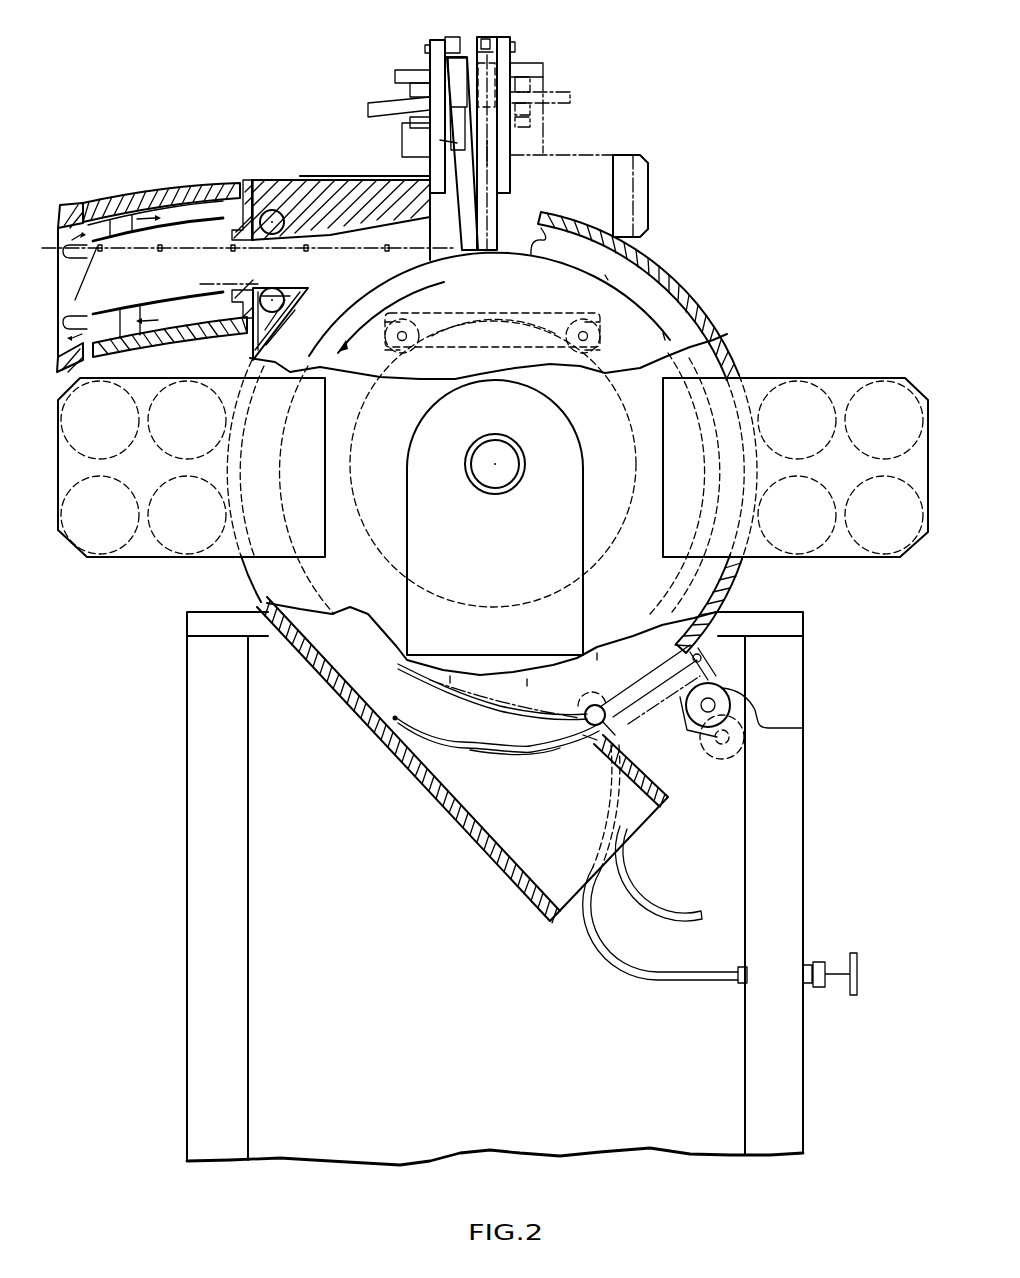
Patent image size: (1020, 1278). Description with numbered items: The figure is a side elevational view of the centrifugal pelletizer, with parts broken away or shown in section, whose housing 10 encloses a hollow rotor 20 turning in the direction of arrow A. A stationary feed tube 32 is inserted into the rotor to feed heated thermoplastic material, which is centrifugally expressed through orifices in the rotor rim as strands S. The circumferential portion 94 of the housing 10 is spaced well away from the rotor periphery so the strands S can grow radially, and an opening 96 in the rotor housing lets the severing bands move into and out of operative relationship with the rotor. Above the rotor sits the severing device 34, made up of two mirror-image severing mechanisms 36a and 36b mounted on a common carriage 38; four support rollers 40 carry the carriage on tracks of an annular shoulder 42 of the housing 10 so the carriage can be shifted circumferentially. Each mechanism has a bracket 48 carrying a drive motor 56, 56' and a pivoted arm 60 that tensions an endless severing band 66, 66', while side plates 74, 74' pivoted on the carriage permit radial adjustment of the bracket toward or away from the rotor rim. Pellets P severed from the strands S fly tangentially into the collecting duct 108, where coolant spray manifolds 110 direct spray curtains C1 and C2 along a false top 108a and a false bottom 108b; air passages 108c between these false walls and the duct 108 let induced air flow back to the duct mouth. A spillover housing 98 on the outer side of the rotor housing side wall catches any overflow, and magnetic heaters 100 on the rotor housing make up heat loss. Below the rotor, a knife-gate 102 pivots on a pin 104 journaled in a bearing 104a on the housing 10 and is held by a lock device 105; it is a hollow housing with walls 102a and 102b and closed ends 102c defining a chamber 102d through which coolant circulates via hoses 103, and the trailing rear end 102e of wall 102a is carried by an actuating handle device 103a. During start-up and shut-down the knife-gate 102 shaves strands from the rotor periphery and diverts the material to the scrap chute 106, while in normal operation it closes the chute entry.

The housing 10 is at (808, 811).
The hollow rotor 20 is at (668, 341).
The stationary feed tube 32 is at (523, 464).
The severing device 34 is at (380, 59).
The severing mechanism 36a is at (426, 47).
The severing mechanism 36b is at (510, 48).
The carriage 38 is at (537, 320).
The support rollers 40 is at (598, 346).
The annular shoulder 42 is at (380, 385).
The bracket 48 is at (452, 80).
The drive motor 56 is at (341, 198).
The drive motor 56' is at (595, 174).
The arm 60 is at (432, 135).
The endless severing band 66 is at (404, 151).
The endless severing band 66' is at (523, 165).
The side plates 74 is at (382, 112).
The side plates 74' is at (549, 108).
The circumferential portion of housing 94 is at (668, 262).
The opening 96 is at (545, 240).
The spillover housing 98 is at (558, 608).
The magnetic heaters 100 is at (143, 552).
The knife-gate 102 is at (424, 740).
The wall 102a is at (545, 750).
The wall 102b is at (470, 728).
The closed ends 102c is at (563, 745).
The chamber 102d is at (517, 748).
The trailing rear end 102e is at (650, 687).
The inlet and outlet hoses 103 is at (653, 918).
The actuating handle device 103a is at (791, 717).
The pin 104 is at (628, 725).
The bearing 104a is at (580, 703).
The lock device 105 is at (700, 732).
The scrap chute 106 is at (499, 847).
The collecting duct 108 is at (190, 180).
The false top 108a is at (197, 210).
The false bottom 108b is at (160, 290).
The air passages 108c is at (240, 190).
The coolant spray manifolds 110 is at (272, 234).
The arrow A is at (398, 290).
The spray curtain C1 is at (245, 186).
The spray curtain C2 is at (252, 284).
The pellets P is at (387, 250).
The strands S is at (662, 336).